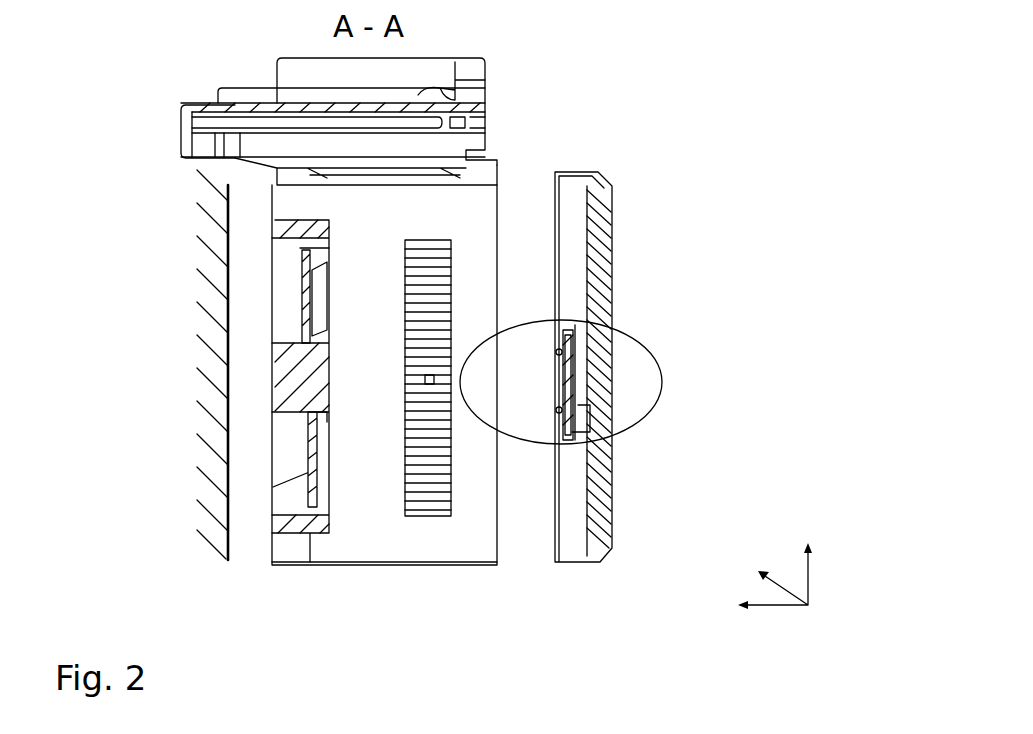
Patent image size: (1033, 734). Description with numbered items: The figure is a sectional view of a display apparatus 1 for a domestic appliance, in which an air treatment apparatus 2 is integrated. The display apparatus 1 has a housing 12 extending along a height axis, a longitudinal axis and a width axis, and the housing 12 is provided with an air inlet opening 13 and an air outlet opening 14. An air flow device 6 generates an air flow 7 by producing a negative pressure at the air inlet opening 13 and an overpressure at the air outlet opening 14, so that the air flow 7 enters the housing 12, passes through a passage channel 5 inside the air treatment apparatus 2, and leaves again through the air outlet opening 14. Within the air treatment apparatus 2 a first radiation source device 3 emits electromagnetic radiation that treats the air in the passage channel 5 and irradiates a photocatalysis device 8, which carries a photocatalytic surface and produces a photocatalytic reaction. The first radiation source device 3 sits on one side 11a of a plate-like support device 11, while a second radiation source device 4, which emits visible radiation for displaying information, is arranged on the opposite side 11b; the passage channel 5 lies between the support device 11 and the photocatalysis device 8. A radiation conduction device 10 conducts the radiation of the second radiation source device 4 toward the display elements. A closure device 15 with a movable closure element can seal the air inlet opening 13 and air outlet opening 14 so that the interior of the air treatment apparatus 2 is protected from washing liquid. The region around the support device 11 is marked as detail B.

The display apparatus 1 is at (130, 76).
The air treatment apparatus 2 is at (287, 592).
The first radiation source device 3 is at (558, 352).
The second radiation source device 4 is at (590, 428).
The passage channel 5 is at (536, 569).
The air flow device 6 is at (273, 363).
The air flow 7 is at (422, 216).
The photocatalysis device 8 is at (450, 500).
The radiation conduction device 10 is at (600, 218).
The support device 11 is at (585, 322).
The first side 11a is at (598, 462).
The second side 11b is at (578, 372).
The housing 12 is at (350, 568).
The air inlet opening 13 is at (249, 459).
The air outlet opening 14 is at (264, 543).
The closure device 15 is at (225, 320).
The detail region B is at (568, 382).